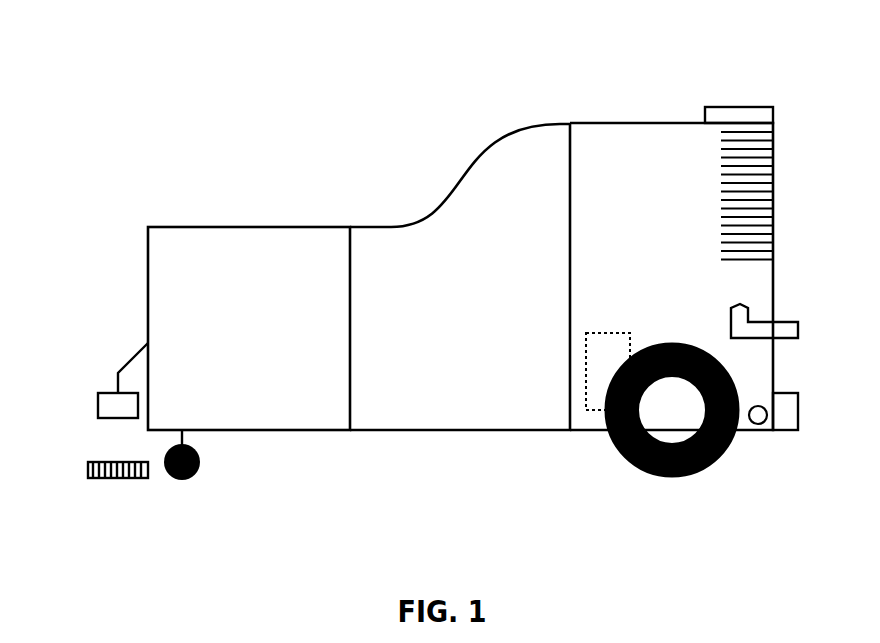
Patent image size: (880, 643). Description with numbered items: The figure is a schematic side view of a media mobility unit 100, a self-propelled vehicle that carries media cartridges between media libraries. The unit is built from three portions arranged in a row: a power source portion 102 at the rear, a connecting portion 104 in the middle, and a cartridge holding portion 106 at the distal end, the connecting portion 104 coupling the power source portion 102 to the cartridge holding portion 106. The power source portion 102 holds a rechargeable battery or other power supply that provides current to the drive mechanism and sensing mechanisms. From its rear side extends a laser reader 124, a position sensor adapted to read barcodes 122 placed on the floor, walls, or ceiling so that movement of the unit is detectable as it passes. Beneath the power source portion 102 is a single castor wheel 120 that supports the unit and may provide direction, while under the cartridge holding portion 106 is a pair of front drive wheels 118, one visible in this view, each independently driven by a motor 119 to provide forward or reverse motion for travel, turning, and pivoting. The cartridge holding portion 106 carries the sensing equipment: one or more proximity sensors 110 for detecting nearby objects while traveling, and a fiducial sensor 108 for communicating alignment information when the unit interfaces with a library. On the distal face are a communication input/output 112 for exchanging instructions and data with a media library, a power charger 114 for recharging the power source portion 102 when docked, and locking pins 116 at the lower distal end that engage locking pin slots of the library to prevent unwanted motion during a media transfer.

The media mobility unit 100 is at (119, 105).
The power source portion 102 is at (231, 337).
The connecting portion 104 is at (434, 336).
The cartridge holding portion 106 is at (654, 286).
The fiducial sensor 108 is at (713, 113).
The proximity sensor 110 is at (765, 113).
The communication input/output 112 is at (790, 330).
The power charger 114 is at (790, 402).
The locking pins 116 is at (758, 424).
The front drive wheels 118 is at (640, 470).
The motor 119 is at (598, 410).
The castor wheel 120 is at (181, 480).
The barcodes 122 is at (90, 465).
The laser reader 124 is at (104, 403).